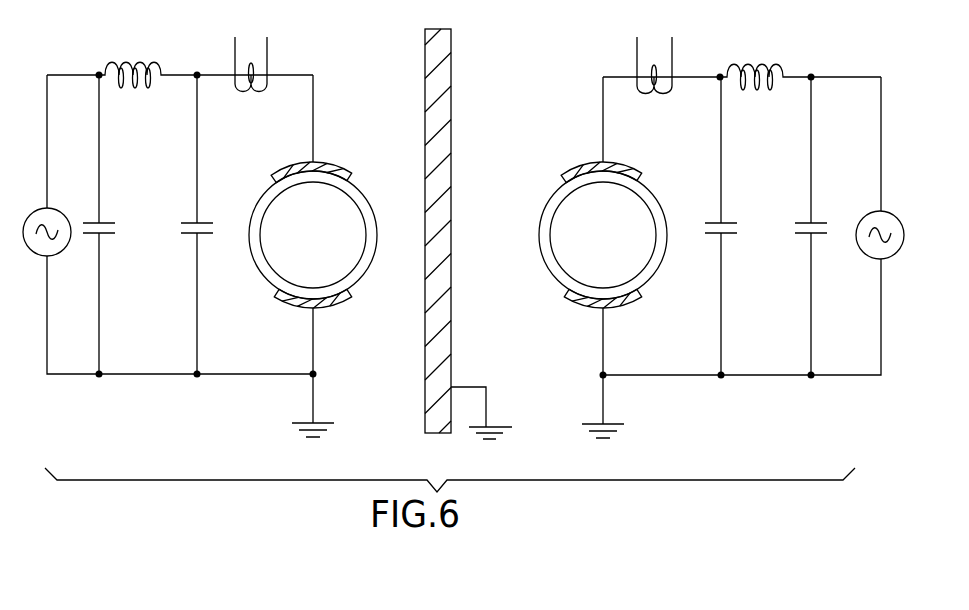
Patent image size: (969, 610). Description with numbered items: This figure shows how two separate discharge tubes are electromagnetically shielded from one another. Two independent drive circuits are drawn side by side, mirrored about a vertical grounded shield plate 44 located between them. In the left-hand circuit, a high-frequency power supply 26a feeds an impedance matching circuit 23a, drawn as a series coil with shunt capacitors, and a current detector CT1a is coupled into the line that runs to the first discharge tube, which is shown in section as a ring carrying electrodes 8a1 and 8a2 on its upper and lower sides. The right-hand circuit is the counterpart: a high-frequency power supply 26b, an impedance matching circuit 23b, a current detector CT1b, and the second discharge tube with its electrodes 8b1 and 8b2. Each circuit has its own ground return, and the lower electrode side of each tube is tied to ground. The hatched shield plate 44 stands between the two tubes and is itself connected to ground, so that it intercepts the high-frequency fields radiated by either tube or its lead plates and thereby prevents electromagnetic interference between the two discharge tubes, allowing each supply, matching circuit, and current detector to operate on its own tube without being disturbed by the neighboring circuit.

The impedance matching circuit 23a is at (132, 62).
The impedance matching circuit 23b is at (768, 63).
The current detector CT1a is at (273, 52).
The current detector CT1b is at (677, 47).
The high-frequency power supply 26a is at (57, 256).
The high-frequency power supply 26b is at (869, 256).
The upper electrode of transducer 8a1 is at (337, 166).
The lower electrode of transducer 8a2 is at (342, 301).
The upper electrode of transducer 8b1 is at (639, 170).
The lower electrode of transducer 8b2 is at (637, 301).
The shield plate 44 is at (451, 63).